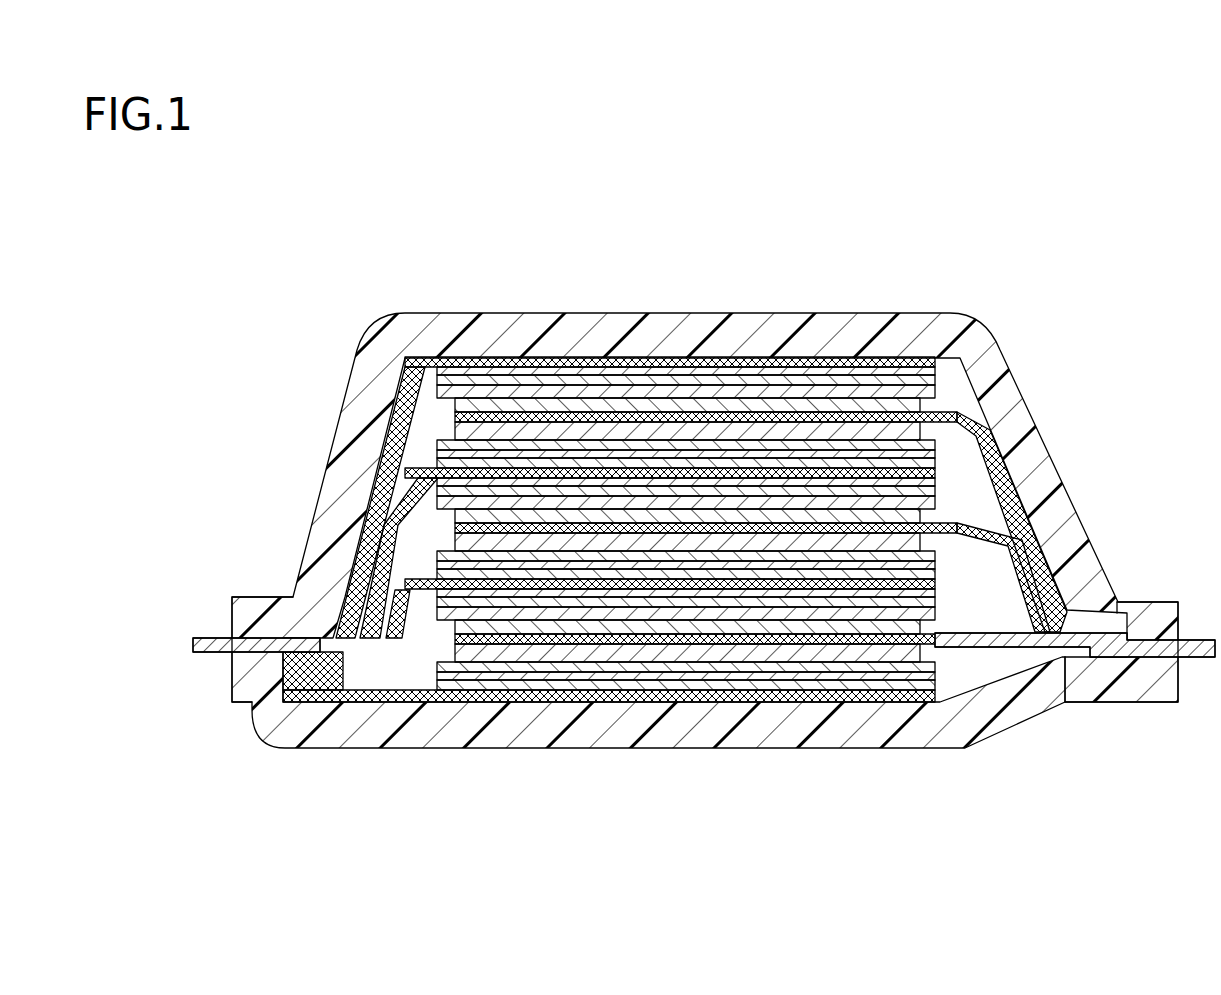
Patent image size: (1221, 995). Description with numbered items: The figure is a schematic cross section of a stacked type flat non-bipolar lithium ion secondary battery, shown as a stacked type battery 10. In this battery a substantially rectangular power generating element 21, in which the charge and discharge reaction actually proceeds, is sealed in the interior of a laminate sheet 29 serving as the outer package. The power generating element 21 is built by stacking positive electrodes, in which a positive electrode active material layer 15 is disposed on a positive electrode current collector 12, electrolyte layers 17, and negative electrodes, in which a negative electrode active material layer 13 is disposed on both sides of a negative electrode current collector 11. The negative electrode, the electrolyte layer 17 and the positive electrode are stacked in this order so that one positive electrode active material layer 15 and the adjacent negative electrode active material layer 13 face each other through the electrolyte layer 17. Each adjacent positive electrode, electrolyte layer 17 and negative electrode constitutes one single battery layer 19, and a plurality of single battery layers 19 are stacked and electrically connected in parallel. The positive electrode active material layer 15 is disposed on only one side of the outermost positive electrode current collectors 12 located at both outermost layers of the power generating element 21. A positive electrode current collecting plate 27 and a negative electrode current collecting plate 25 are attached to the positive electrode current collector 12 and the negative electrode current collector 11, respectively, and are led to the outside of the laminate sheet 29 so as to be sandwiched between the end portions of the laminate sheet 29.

The stacked type battery 10 is at (248, 188).
The negative electrode current collector 11 is at (783, 360).
The positive electrode current collector 12 is at (599, 398).
The negative electrode active material layer 13 is at (735, 375).
The positive electrode active material layer 15 is at (642, 404).
The electrolyte layer 17 is at (690, 385).
The single battery layer 19 is at (802, 230).
The power generating element 21 is at (947, 588).
The negative electrode current collecting plate 25 is at (210, 638).
The positive electrode current collecting plate 27 is at (1200, 640).
The laminate sheet 29 is at (1162, 600).